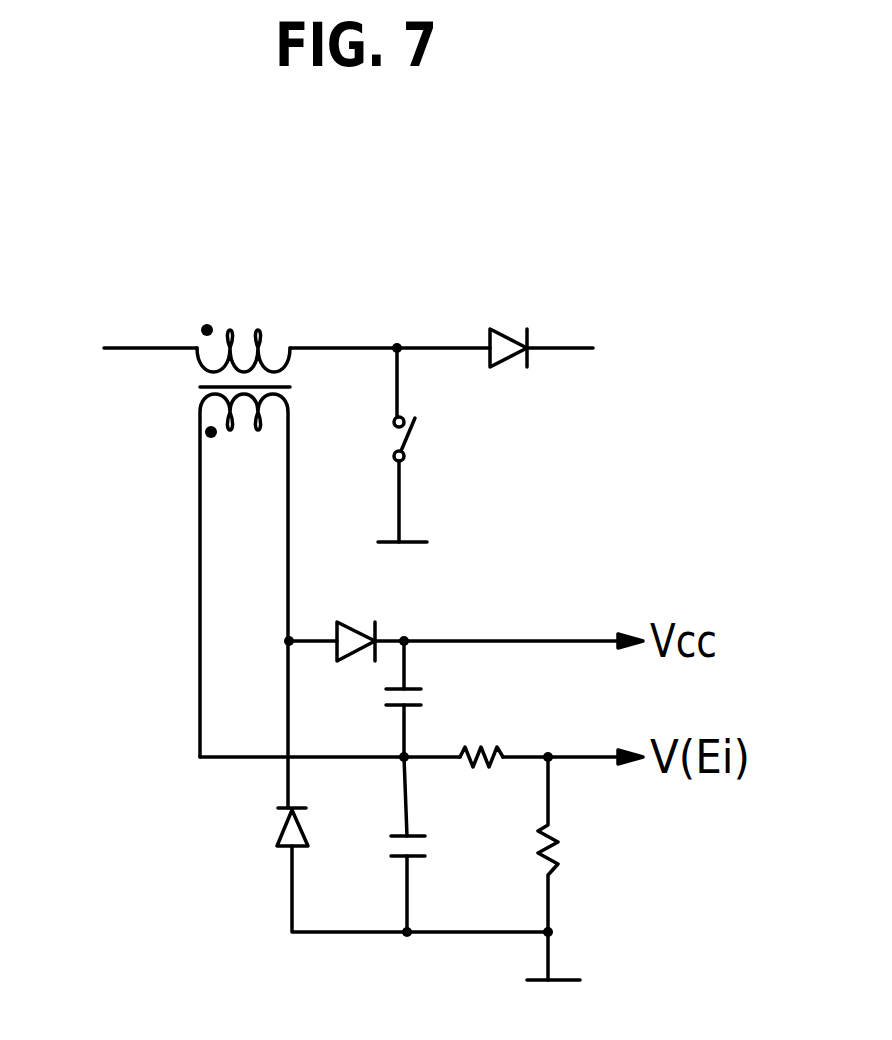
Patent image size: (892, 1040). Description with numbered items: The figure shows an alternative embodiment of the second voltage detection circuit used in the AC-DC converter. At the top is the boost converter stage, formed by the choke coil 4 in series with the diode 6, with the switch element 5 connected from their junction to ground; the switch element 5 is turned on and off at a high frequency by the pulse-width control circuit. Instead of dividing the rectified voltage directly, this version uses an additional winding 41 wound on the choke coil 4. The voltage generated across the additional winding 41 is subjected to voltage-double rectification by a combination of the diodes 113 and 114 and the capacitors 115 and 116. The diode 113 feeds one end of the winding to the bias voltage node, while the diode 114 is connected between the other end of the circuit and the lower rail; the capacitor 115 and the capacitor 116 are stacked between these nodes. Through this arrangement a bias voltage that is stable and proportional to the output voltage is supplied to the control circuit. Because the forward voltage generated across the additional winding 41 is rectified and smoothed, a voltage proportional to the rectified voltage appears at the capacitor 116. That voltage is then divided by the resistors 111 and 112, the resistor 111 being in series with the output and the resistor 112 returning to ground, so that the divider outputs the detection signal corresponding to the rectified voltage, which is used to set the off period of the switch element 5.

The choke coil 4 is at (238, 346).
The additional winding 41 is at (257, 433).
The switch element 5 is at (410, 433).
The diode 6 is at (499, 326).
The resistor 111 is at (483, 742).
The resistor 112 is at (553, 858).
The diode 113 is at (346, 619).
The diode 114 is at (278, 843).
The capacitor 115 is at (383, 698).
The capacitor 116 is at (385, 848).